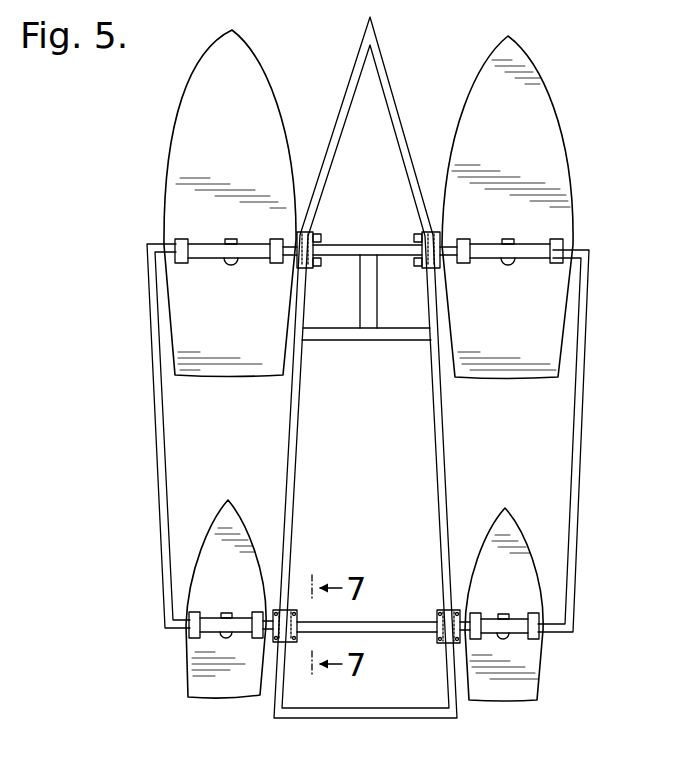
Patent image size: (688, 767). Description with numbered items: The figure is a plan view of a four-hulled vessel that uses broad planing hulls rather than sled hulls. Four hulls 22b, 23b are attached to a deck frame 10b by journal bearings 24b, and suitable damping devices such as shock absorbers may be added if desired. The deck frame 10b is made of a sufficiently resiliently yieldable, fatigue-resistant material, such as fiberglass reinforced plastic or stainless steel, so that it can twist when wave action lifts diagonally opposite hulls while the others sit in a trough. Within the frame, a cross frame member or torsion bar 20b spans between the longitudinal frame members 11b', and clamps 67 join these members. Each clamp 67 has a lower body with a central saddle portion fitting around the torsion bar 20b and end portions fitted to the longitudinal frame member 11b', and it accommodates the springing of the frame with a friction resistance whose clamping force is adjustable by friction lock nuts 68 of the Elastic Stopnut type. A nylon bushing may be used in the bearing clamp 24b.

The deck frame 10b is at (150, 424).
The longitudinal frame member 11b' is at (365, 367).
The cross frame member or torsion bar 20b is at (369, 246).
The hull 22b is at (170, 132).
The hull 23b is at (214, 514).
The journal bearing 24b is at (205, 247).
The clamp 67 is at (321, 264).
The friction lock nut 68 is at (298, 619).